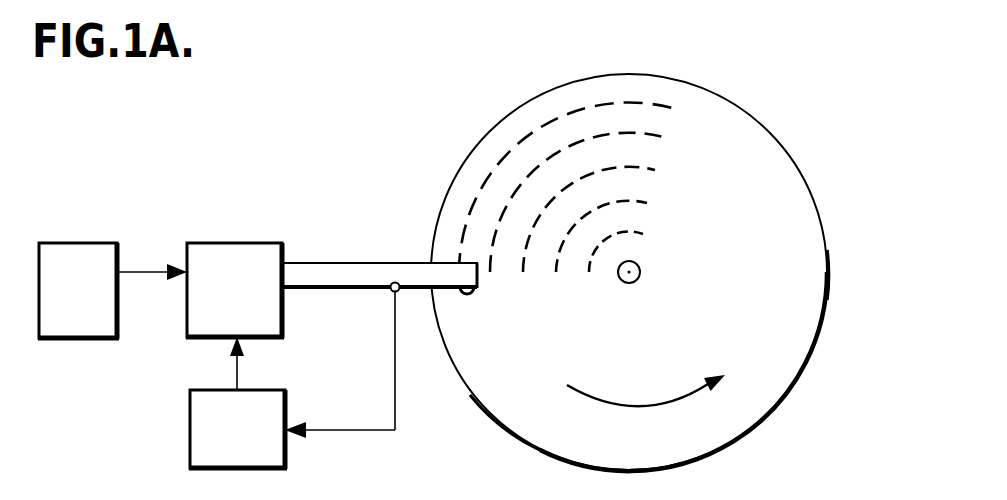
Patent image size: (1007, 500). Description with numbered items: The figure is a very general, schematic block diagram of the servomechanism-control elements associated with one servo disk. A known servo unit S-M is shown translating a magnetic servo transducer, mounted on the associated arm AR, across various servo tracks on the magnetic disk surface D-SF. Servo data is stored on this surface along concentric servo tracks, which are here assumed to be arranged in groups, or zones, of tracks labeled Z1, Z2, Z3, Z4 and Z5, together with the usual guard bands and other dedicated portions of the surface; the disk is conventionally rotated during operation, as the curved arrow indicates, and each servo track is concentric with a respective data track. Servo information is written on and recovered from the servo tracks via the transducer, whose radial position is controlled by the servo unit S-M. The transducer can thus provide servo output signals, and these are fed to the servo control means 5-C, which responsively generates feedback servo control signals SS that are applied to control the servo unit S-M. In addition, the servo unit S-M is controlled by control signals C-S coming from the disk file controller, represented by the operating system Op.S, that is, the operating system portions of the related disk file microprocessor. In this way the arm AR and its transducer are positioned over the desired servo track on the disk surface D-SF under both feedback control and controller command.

The magnetic disk surface D-SF is at (782, 383).
The first zone of servo tracks Z1 is at (677, 94).
The second zone of servo tracks Z2 is at (665, 123).
The third zone of servo tracks Z3 is at (661, 158).
The fourth zone of servo tracks Z4 is at (650, 188).
The track zone 5 Z5 is at (640, 218).
The arm AR is at (341, 276).
The operating system Op.S is at (78, 291).
The control signals C-S is at (155, 273).
The servo unit S-M is at (235, 290).
The feedback servo control signals SS is at (240, 366).
The servo control means 5-C is at (238, 429).